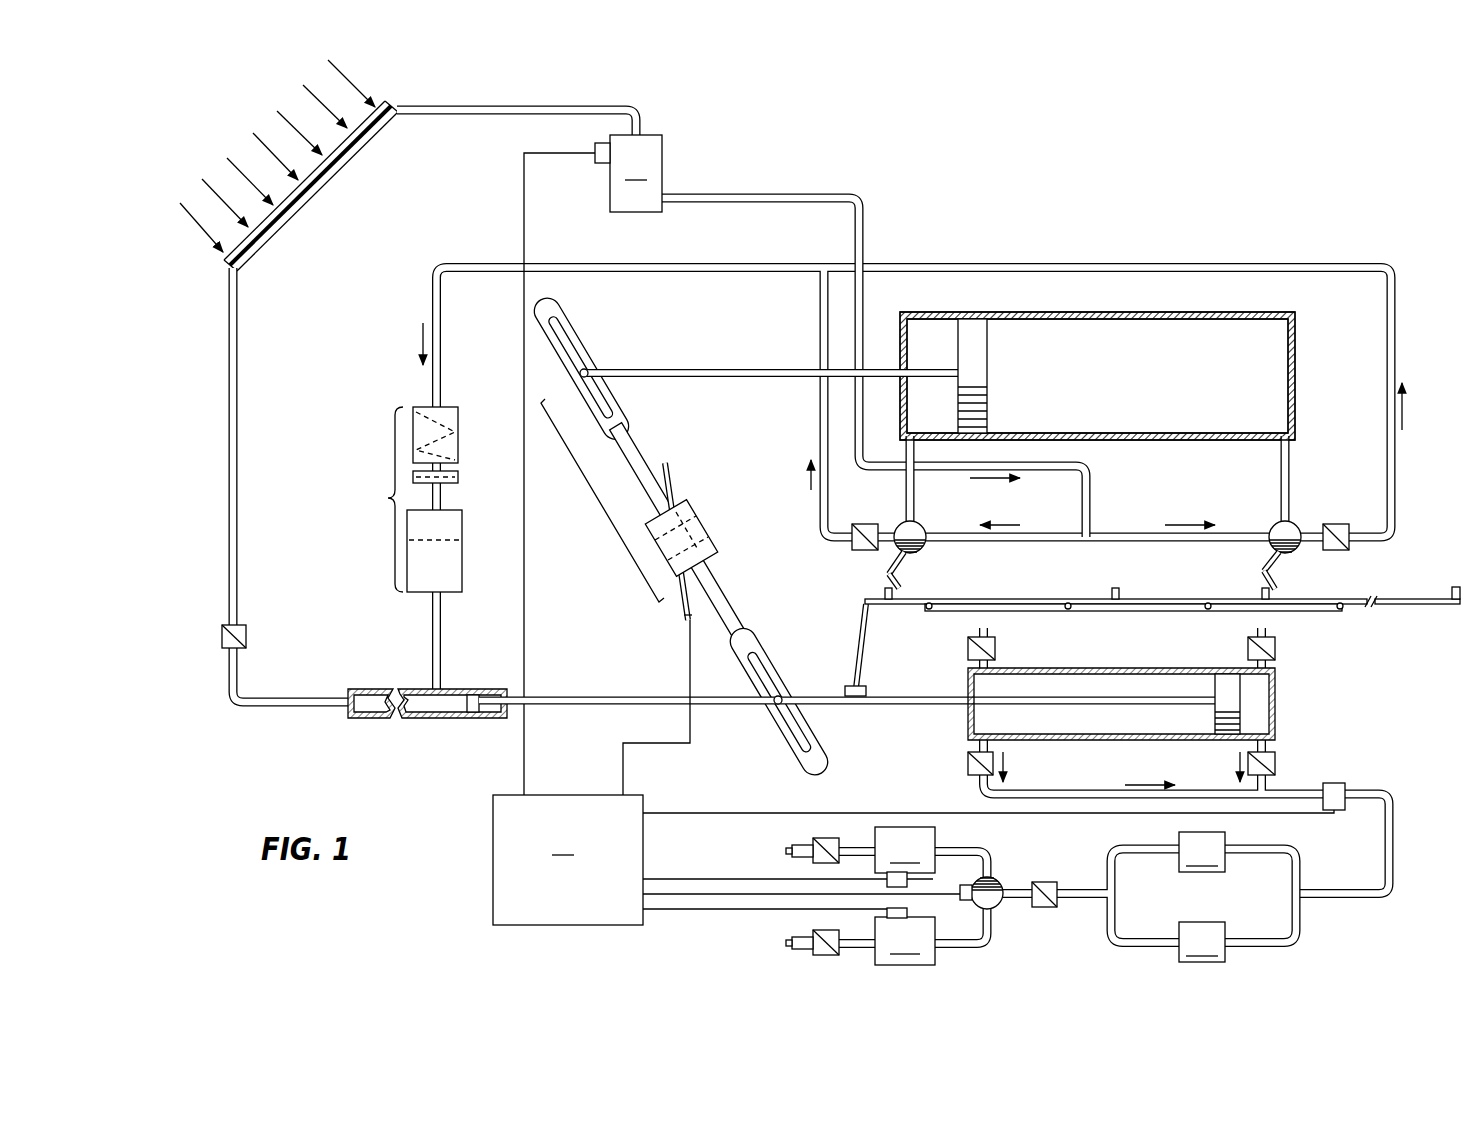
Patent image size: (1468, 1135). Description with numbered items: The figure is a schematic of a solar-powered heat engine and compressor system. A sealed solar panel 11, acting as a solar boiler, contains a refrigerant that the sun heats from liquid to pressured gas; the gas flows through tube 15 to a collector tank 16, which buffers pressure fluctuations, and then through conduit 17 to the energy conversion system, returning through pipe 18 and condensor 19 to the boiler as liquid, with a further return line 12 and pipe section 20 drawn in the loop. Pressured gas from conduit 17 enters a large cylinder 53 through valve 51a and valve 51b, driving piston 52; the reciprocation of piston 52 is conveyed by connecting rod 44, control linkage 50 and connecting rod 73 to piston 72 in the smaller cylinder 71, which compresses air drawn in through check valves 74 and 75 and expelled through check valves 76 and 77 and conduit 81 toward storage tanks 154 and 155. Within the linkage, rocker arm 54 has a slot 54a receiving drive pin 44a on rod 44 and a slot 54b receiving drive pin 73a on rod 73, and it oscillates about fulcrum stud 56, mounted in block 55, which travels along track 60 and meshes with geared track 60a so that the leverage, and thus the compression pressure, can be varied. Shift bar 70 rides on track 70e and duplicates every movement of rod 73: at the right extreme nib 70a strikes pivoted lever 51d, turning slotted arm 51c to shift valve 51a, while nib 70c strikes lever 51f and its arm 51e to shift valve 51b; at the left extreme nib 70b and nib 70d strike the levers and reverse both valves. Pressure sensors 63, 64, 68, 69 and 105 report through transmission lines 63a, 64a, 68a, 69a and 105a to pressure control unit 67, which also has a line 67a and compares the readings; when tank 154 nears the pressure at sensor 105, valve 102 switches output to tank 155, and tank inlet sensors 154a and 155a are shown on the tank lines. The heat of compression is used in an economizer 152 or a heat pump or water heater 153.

The solar panel 11 is at (320, 206).
The return pipe 12 is at (240, 368).
The tube 15 is at (466, 112).
The collector tank 16 is at (636, 173).
The conduit 17 is at (748, 196).
The pipe 18 is at (432, 275).
The condensor 19 is at (411, 499).
The pipe section 20 is at (375, 688).
The connecting rod 44 is at (683, 371).
The drive pin 44a is at (590, 368).
The control linkage 50 is at (602, 500).
The valve 51a is at (917, 523).
The valve 51b is at (1291, 521).
The slotted arm 51c is at (905, 562).
The pivoted lever 51d is at (905, 585).
The pump lever 51e is at (1263, 560).
The lever 51f is at (1278, 579).
The piston 52 is at (987, 370).
The cylinder 53 is at (1272, 372).
The rocker arm 54 is at (714, 579).
The slot 54a is at (563, 327).
The slot 54b is at (822, 752).
The pivot block 55 is at (700, 528).
The fulcrum stud 56 is at (695, 500).
The track 60 is at (672, 462).
The geared track 60a is at (683, 618).
The sensor 63 is at (597, 150).
The transmission line 63a is at (524, 190).
The sensor 64 is at (1345, 790).
The transmission line 64a is at (1332, 815).
The pressure control unit 67 is at (568, 860).
The control line 67a is at (622, 760).
The sensor 68 is at (978, 882).
The transmission line 68a is at (683, 878).
The sensor 69 is at (908, 912).
The transmission line 69a is at (663, 910).
The shift bar 70 is at (1395, 605).
The nib 70a is at (884, 588).
The nib 70b is at (1121, 592).
The nib 70c is at (1261, 590).
The nib 70d is at (1451, 586).
The track 70e is at (1128, 612).
The cylinder 71 is at (1258, 700).
The piston 72 is at (1213, 673).
The connecting rod 73 is at (578, 695).
The drive pin 73a is at (773, 705).
The check valve 74 is at (996, 645).
The check valve 75 is at (1276, 645).
The check valve 76 is at (1277, 762).
The check valve 77 is at (966, 764).
The conduit 81 is at (1060, 792).
The valve 102 is at (999, 880).
The sensor 105 is at (982, 863).
The transmission line 105a is at (722, 893).
The economizer 152 is at (1149, 887).
The heat pump or water heater 153 is at (1202, 942).
The storage tank 154 is at (913, 853).
The sensor 154a is at (812, 840).
The storage tank 155 is at (913, 935).
The sensor 155a is at (812, 946).